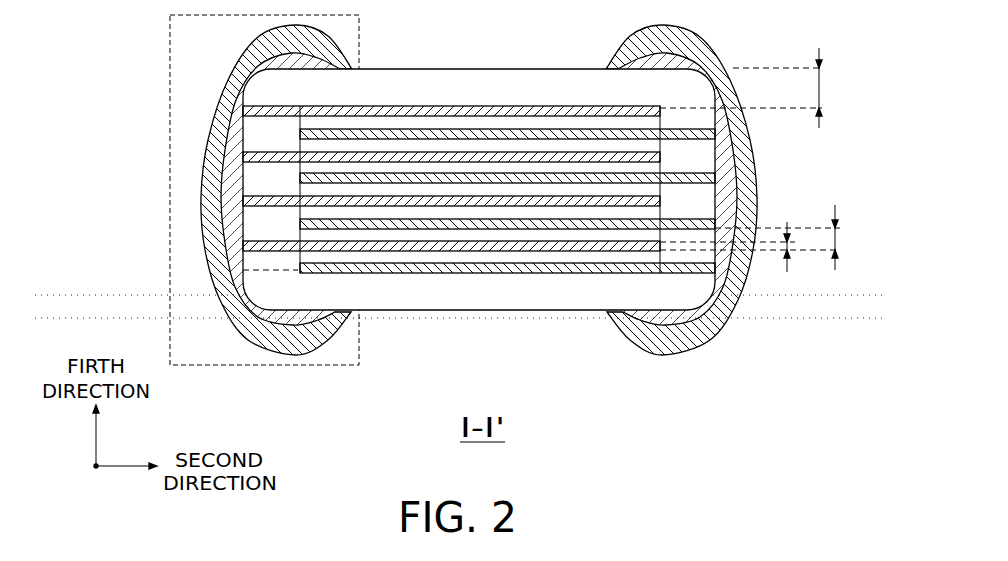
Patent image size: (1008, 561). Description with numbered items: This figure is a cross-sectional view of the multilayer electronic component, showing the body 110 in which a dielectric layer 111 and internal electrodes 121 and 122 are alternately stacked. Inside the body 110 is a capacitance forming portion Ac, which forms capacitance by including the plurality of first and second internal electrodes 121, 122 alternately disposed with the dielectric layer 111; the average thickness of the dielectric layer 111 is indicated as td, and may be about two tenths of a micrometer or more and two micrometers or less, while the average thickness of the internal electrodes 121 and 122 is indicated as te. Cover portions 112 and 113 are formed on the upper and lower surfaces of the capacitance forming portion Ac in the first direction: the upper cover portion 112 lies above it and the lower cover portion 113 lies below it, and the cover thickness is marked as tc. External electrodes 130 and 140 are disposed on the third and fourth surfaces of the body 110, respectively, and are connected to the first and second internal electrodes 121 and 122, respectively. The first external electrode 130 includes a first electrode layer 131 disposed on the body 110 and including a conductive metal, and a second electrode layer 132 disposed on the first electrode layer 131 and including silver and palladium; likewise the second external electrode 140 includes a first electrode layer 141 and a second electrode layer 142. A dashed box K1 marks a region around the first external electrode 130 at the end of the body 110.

The body 110 is at (438, 68).
The dielectric layer 111 is at (393, 143).
The upper cover portion 112 is at (495, 85).
The lower cover portion 113 is at (493, 290).
The first internal electrode 121 is at (542, 107).
The second internal electrode 122 is at (593, 137).
The first external electrode 130 is at (204, 190).
The first electrode layer 131 is at (228, 157).
The second electrode layer 132 is at (212, 183).
The second external electrode 140 is at (743, 190).
The first electrode layer 141 is at (735, 163).
The second electrode layer 142 is at (748, 186).
The capacitance forming portion Ac is at (562, 275).
The region K1 is at (170, 255).
The cover portion thickness tc is at (751, 88).
The average thickness of the dielectric layer td is at (763, 237).
The average thickness of the internal electrodes te is at (738, 247).